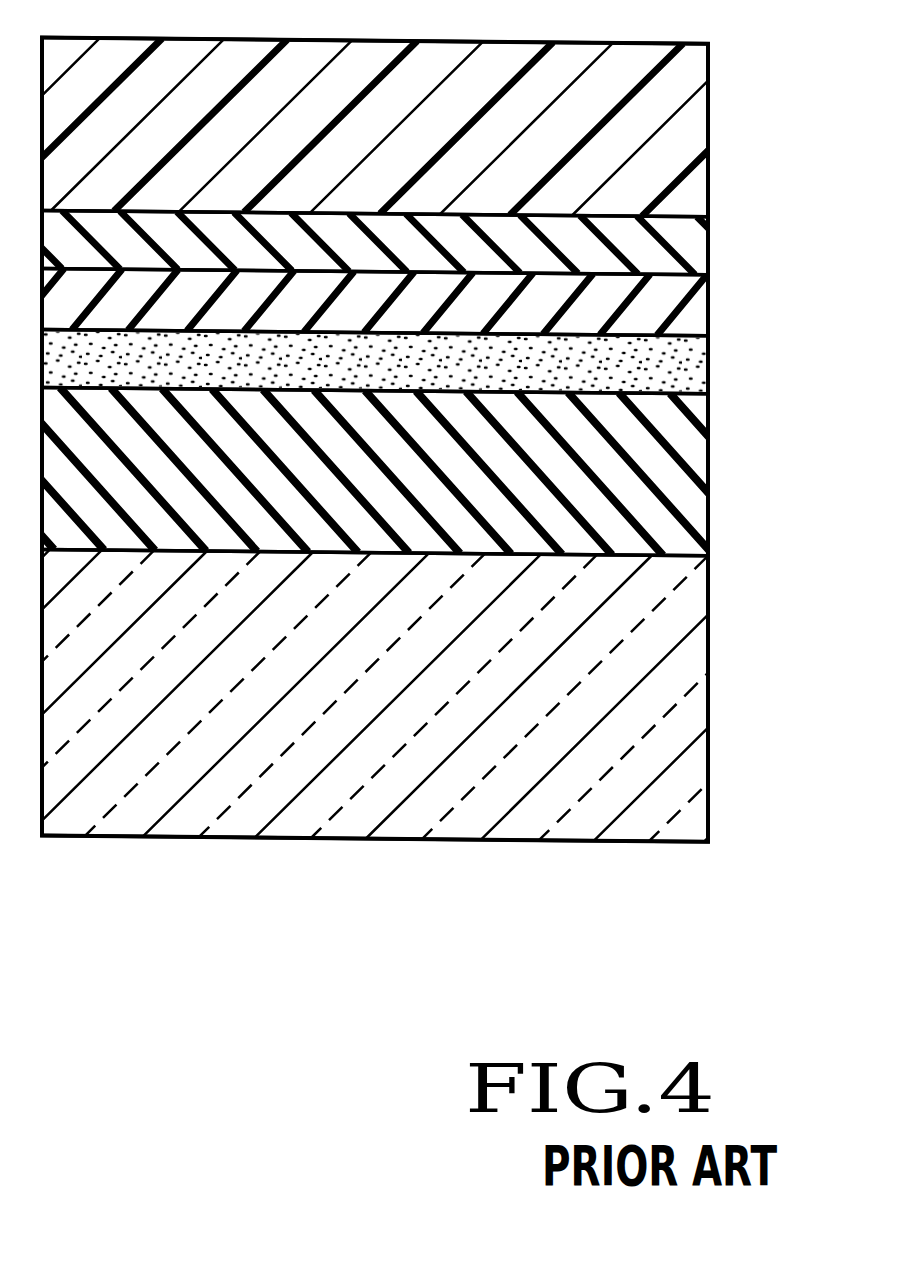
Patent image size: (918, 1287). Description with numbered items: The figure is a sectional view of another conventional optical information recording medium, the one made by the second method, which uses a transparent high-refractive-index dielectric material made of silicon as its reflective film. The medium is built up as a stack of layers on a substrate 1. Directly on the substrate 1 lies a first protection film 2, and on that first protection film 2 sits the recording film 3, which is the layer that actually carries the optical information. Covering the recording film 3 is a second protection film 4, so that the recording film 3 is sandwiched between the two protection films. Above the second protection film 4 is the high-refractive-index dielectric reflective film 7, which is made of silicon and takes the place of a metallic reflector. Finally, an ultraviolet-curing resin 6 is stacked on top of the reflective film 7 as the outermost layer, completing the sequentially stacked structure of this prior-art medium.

The substrate 1 is at (625, 668).
The first protection film 2 is at (625, 488).
The recording film 3 is at (653, 367).
The second protection film 4 is at (655, 306).
The ultraviolet-curing resin 6 is at (653, 150).
The high-refractive-index dielectric reflective film 7 is at (643, 248).